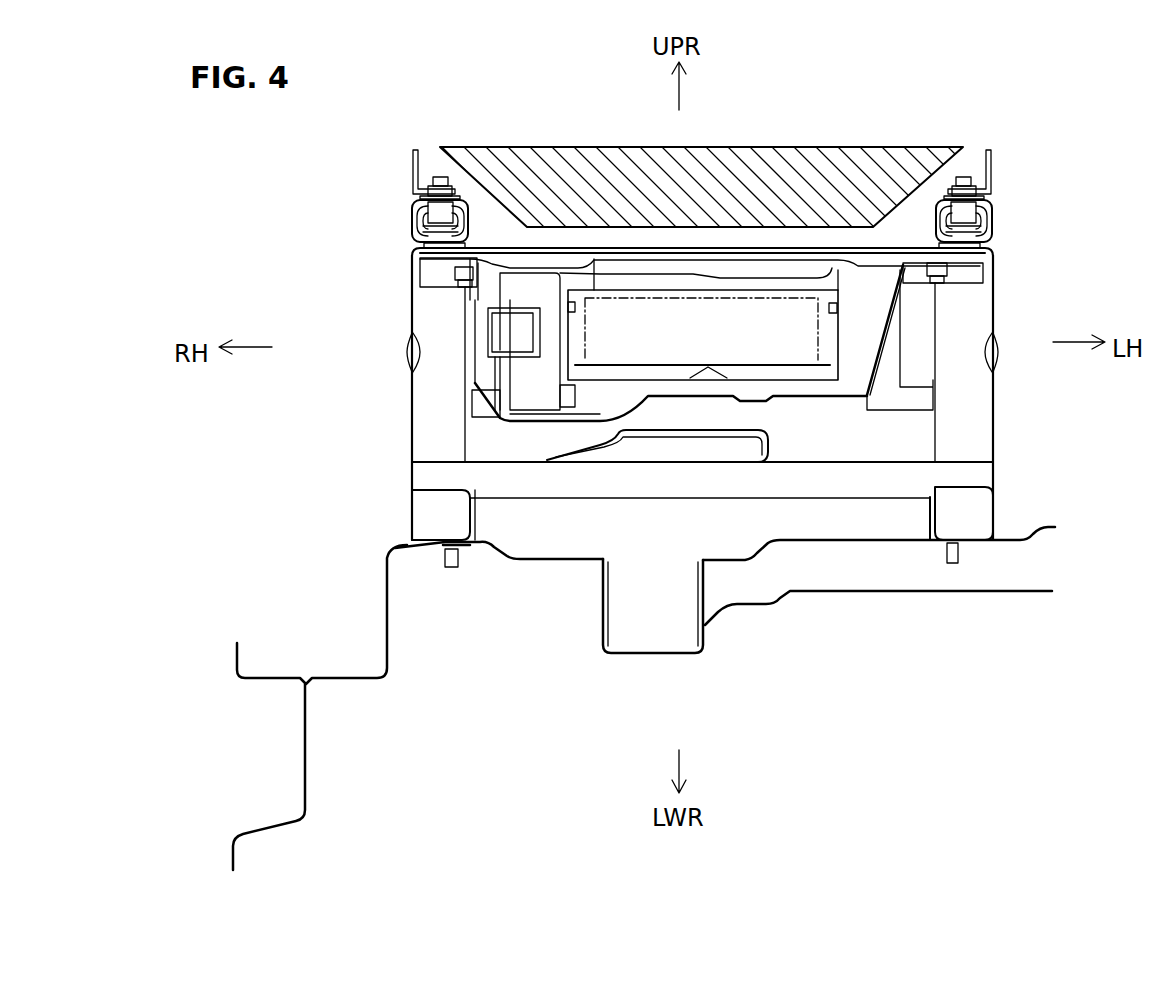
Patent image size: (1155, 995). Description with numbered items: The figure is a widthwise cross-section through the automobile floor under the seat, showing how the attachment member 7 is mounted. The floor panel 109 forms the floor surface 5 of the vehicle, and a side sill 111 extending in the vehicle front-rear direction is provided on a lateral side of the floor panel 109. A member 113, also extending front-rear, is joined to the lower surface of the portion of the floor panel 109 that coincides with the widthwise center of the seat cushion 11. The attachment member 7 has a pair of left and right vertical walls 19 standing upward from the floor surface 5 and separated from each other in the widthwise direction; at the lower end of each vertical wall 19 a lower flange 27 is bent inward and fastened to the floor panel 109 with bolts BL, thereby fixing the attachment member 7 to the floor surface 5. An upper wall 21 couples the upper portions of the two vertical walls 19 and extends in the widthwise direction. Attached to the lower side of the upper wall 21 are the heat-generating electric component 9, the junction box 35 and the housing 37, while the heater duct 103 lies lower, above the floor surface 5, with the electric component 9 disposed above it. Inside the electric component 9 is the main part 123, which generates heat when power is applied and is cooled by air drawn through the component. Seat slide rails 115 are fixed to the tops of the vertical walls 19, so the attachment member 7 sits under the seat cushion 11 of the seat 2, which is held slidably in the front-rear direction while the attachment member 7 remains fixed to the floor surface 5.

The seat 2 is at (727, 159).
The seat cushion 11 is at (794, 175).
The seat slide rails 115 is at (410, 218).
The attachment member 7 is at (1008, 265).
The upper wall 21 is at (633, 252).
The main part 123 is at (731, 297).
The vertical walls 19 is at (411, 425).
The junction box 35 is at (520, 300).
The heat-generating electric component 9 is at (806, 383).
The housing 37 is at (877, 372).
The heater duct 103 is at (690, 460).
The lower flange 27 is at (411, 515).
The bolts BL is at (450, 552).
The floor surface 5 is at (725, 585).
The floor panel 109 is at (533, 550).
The member 113 is at (645, 657).
The side sill 111 is at (306, 777).